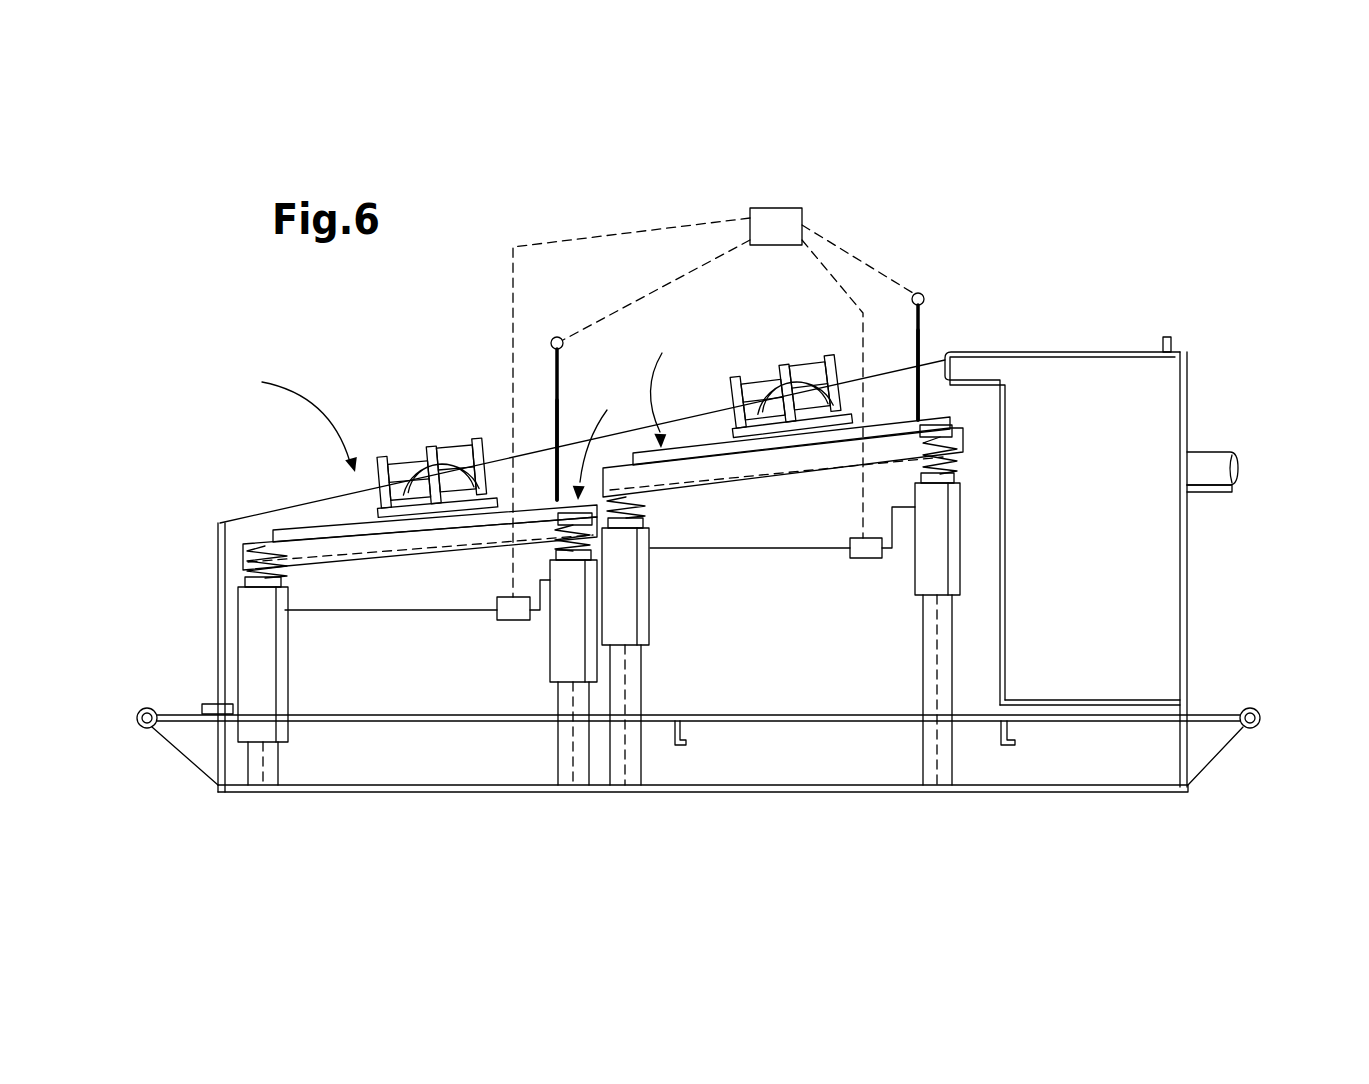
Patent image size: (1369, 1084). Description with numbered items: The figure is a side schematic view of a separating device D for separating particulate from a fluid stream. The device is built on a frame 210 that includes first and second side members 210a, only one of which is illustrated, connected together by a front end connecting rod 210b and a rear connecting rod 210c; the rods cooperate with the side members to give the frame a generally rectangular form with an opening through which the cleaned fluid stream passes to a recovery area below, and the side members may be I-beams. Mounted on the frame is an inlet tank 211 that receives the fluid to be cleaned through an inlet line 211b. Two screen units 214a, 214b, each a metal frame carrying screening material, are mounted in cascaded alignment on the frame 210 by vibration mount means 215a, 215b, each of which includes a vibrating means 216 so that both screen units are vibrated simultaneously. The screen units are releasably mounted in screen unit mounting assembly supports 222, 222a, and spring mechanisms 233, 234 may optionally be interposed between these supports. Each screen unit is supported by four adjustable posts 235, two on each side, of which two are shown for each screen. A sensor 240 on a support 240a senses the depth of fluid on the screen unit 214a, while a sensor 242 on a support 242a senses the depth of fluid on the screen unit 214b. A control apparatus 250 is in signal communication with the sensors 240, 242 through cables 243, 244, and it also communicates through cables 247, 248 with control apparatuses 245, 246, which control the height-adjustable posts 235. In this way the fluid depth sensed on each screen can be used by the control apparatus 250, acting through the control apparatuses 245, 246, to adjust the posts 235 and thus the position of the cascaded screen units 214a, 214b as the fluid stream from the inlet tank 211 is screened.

The frame 210 is at (385, 808).
The side member 210a is at (507, 762).
The front end connecting rod 210b is at (147, 706).
The rear connecting rod 210c is at (1252, 706).
The inlet tank 211 is at (1095, 352).
The inlet line 211b is at (1210, 455).
The screen unit 214a is at (352, 557).
The screen unit 214b is at (743, 490).
The vibration mount means 215a is at (607, 438).
The vibration mount means 215b is at (671, 388).
The vibrating means 216 is at (433, 453).
The screen unit mounting assembly support 222 is at (705, 448).
The screen unit mounting assembly support 222a is at (318, 533).
The spring mechanism 233 is at (640, 507).
The spring mechanism 234 is at (277, 575).
The adjustable post 235 is at (257, 642).
The sensor 240 is at (553, 338).
The support 240a is at (555, 415).
The sensor 242 is at (925, 292).
The support 242a is at (920, 337).
The cable 243 is at (662, 282).
The cable 244 is at (866, 258).
The control apparatus 245 is at (517, 618).
The control apparatus 246 is at (867, 562).
The cable 247 is at (678, 227).
The cable 248 is at (847, 292).
The control apparatus 250 is at (780, 223).
The separating device D is at (294, 420).